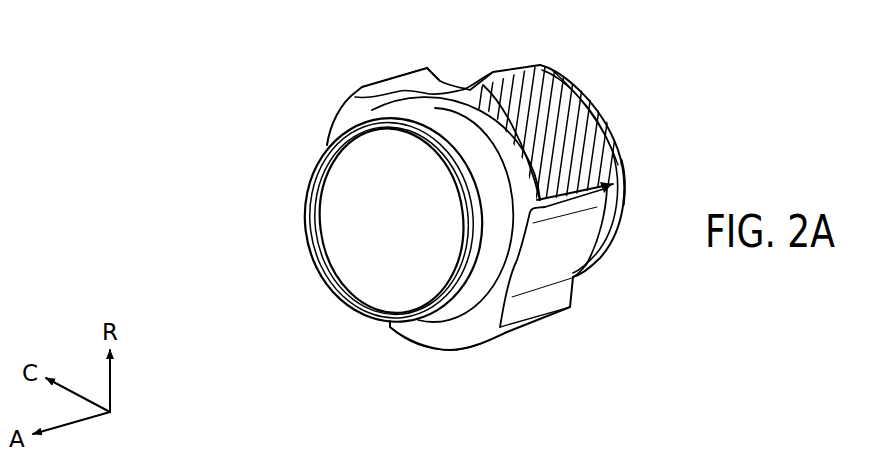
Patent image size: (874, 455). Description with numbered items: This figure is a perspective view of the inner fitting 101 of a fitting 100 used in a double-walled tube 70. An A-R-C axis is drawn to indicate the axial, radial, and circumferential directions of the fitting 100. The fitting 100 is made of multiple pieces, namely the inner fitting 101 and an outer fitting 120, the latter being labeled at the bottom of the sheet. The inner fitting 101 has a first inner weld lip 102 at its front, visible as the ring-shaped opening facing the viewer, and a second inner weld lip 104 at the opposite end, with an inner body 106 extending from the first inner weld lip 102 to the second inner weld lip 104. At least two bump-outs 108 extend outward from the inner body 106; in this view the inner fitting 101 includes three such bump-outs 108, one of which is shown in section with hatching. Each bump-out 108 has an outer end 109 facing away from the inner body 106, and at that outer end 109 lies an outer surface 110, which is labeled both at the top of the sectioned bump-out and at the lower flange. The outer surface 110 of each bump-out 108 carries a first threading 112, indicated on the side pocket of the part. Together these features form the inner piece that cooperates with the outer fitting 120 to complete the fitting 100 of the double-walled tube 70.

The double-walled tube 70 is at (113, 113).
The fitting 100 is at (251, 78).
The inner fitting 101 is at (232, 164).
The first inner weld lip 102 is at (308, 200).
The second inner weld lip 104 is at (624, 170).
The inner body 106 is at (473, 292).
The bump-outs 108 is at (523, 75).
The outer end 109 is at (552, 73).
The outer surface 110 is at (513, 112).
The first threading 112 is at (588, 181).
The outer fitting 120 is at (495, 449).